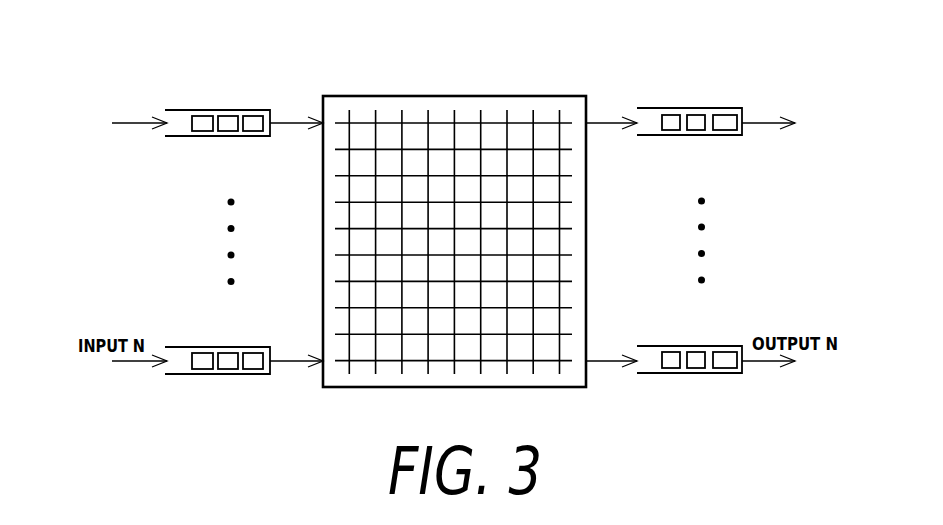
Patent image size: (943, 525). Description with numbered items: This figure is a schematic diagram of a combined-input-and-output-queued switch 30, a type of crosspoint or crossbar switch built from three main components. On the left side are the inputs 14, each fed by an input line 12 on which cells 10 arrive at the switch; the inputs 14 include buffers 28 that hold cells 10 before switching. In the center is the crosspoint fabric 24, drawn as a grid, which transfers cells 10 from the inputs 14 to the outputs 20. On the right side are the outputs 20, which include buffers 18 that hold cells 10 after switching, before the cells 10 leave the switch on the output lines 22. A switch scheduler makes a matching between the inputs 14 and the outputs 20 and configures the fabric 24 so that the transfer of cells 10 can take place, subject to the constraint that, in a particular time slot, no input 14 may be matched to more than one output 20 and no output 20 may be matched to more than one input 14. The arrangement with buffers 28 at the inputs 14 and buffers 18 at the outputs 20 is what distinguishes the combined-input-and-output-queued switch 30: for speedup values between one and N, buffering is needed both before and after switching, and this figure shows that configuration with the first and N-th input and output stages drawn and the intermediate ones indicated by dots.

The cell 10 is at (197, 142).
The input line 12 is at (116, 132).
The input 14 is at (180, 82).
The buffer 18 is at (659, 147).
The output 20 is at (730, 87).
The output line 22 is at (796, 130).
The crosspoint fabric 24 is at (454, 216).
The buffer 28 is at (213, 155).
The combined-input-and-output-queued switch 30 is at (557, 48).